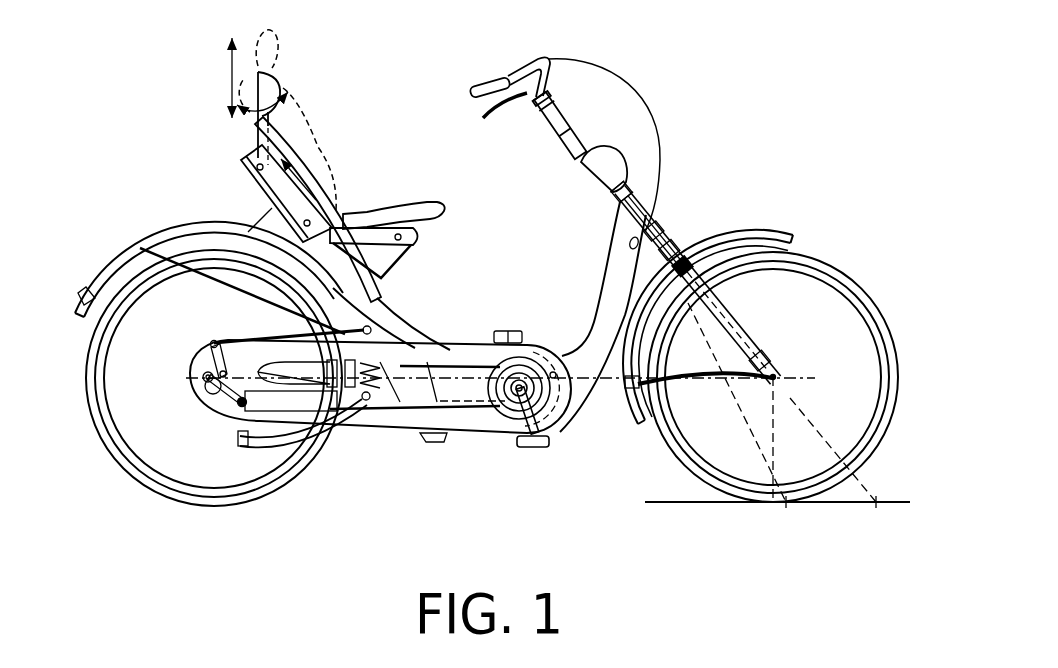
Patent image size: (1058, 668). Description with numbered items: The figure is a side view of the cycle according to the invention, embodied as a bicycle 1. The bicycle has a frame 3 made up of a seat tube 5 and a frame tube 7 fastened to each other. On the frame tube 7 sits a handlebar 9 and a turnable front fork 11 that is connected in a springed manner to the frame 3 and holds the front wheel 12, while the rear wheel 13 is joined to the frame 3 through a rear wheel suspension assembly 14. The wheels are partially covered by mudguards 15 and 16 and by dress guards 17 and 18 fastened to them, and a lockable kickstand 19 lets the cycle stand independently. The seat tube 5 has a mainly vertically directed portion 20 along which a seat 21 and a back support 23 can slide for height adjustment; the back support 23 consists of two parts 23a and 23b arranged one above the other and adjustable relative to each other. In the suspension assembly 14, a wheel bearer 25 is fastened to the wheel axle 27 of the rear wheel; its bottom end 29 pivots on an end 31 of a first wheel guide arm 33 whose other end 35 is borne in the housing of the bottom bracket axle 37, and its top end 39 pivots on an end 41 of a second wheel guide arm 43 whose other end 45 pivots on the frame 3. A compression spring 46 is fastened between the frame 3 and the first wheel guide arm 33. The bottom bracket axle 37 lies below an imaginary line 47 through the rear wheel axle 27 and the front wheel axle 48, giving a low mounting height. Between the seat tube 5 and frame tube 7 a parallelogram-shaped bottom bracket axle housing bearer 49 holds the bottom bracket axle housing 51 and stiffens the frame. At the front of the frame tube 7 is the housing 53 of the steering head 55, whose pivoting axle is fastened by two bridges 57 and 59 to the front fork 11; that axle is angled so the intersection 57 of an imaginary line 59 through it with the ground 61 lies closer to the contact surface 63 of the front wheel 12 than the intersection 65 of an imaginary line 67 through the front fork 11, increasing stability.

The bicycle 1 is at (716, 118).
The frame 3 is at (398, 372).
The seat tube 5 is at (402, 330).
The frame tube 7 is at (622, 272).
The handlebar 9 is at (575, 130).
The front fork 11 is at (743, 338).
The front wheel 12 is at (893, 383).
The rear wheel 13 is at (140, 473).
The rear wheel suspension assembly 14 is at (346, 462).
The mudguard 15 is at (727, 288).
The mudguard 16 is at (118, 258).
The dress guard 17 is at (817, 262).
The dress guard 18 is at (168, 248).
The kickstand 19 is at (283, 437).
The vertically directed portion 20 is at (262, 190).
The seat 21 is at (394, 220).
The back support 23 is at (319, 162).
The upper part of back support 23a is at (268, 80).
The lower part of back support 23b is at (291, 157).
The wheel bearer 25 is at (210, 392).
The wheel axle 27 is at (203, 375).
The bottom end 29 is at (225, 390).
The end of first wheel guide arm 31 is at (260, 397).
The first wheel guide arm 33 is at (425, 402).
The other end of first wheel guide arm 35 is at (490, 405).
The bottom bracket axle 37 is at (543, 425).
The top end 39 is at (208, 348).
The end of second wheel guide arm 41 is at (214, 341).
The second wheel guide arm 43 is at (280, 328).
The other end of second wheel guide arm 45 is at (368, 327).
The compression spring 46 is at (415, 397).
The imaginary line 47 is at (483, 333).
The wheel axle 48 is at (775, 373).
The bottom bracket axle housing bearer 49 is at (557, 410).
The bottom bracket axle housing 51 is at (530, 389).
The housing 53 is at (659, 218).
The steering head 55 is at (671, 240).
The bridge / intersection 57 is at (636, 187).
The bridge / imaginary line 59 is at (684, 270).
The ground 61 is at (672, 503).
The contact surface 63 is at (773, 504).
The intersection 65 is at (875, 504).
The imaginary line 67 is at (805, 413).